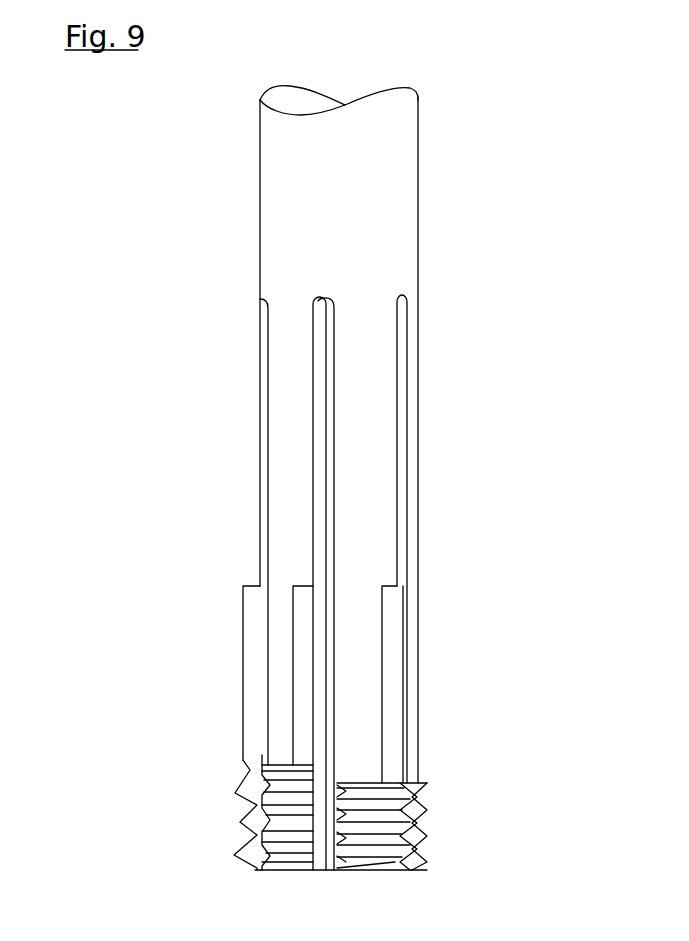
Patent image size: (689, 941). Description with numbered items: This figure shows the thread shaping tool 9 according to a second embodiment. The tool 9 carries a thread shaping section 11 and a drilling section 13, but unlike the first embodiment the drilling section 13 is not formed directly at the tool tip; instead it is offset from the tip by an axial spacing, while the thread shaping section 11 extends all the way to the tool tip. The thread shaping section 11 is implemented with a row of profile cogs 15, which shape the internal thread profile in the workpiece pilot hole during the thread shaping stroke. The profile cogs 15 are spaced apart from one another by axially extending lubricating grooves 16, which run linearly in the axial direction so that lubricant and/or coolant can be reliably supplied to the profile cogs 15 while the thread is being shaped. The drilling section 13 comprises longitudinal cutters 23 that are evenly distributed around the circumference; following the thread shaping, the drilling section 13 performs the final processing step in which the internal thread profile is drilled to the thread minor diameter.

The thread shaping tool 9 is at (256, 257).
The lubricating grooves 16 is at (337, 409).
The longitudinal cutters 23 is at (243, 651).
The drilling section 13 is at (448, 577).
The thread shaping section 11 is at (442, 785).
The profile cogs 15 is at (235, 793).